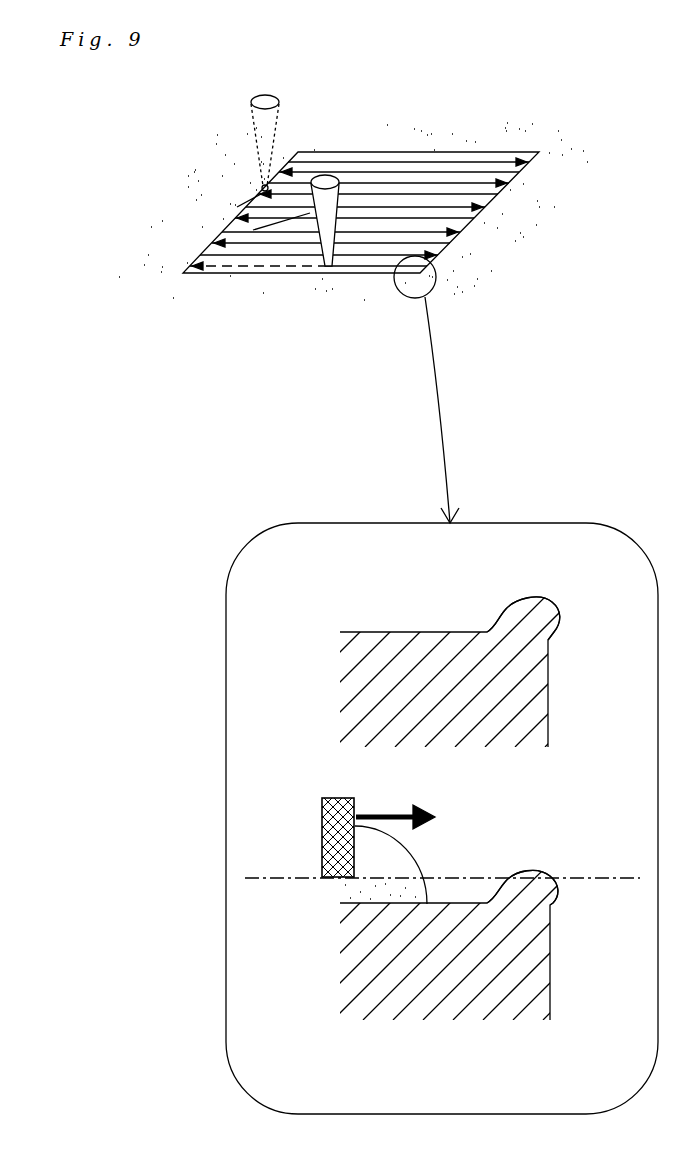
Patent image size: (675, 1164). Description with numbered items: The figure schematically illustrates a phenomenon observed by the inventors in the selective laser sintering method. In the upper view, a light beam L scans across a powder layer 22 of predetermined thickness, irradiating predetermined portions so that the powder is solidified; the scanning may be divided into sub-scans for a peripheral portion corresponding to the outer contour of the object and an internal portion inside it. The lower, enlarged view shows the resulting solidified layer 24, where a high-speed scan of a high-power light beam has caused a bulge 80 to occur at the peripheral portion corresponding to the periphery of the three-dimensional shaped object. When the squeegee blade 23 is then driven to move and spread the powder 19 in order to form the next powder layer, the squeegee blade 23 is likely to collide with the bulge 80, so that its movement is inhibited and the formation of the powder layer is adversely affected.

The powder layer 22 is at (589, 163).
The light beam L is at (228, 232).
The solidified layer 24 is at (461, 705).
The bulge 80 is at (546, 621).
The squeegee blade 23 is at (322, 813).
The powder 19 is at (397, 873).